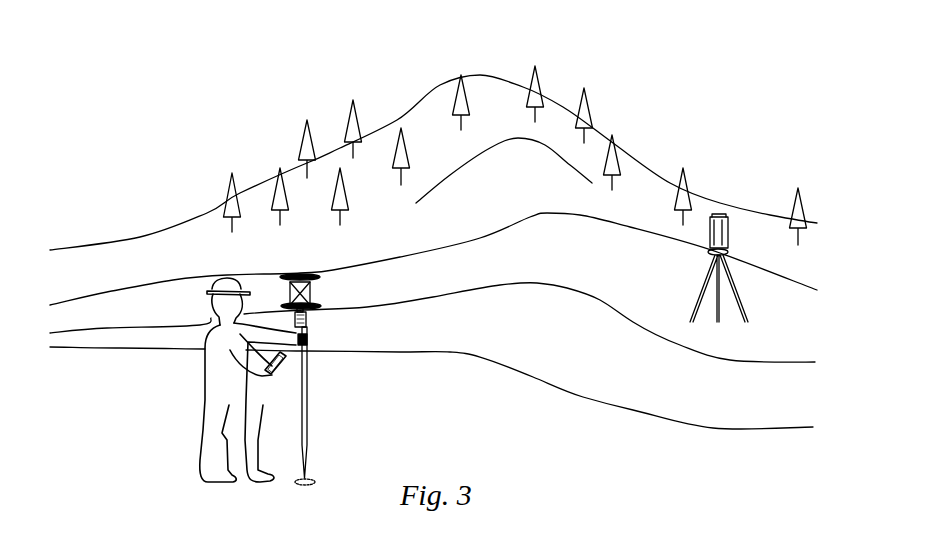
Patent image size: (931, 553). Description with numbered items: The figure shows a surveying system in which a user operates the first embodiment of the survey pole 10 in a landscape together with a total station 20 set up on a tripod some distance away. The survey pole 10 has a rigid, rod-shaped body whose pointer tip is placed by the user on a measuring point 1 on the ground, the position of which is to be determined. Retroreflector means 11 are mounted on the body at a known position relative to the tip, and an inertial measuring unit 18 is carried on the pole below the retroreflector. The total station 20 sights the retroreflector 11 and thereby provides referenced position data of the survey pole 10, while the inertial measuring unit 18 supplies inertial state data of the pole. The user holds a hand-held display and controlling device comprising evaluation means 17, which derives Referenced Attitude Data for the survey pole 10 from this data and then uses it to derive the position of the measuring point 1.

The measuring point 1 is at (310, 477).
The survey pole 10 is at (341, 375).
The retroreflector means 11 is at (315, 293).
The evaluation means 17 is at (284, 368).
The inertial measuring unit 18 is at (307, 318).
The total station 20 is at (684, 262).